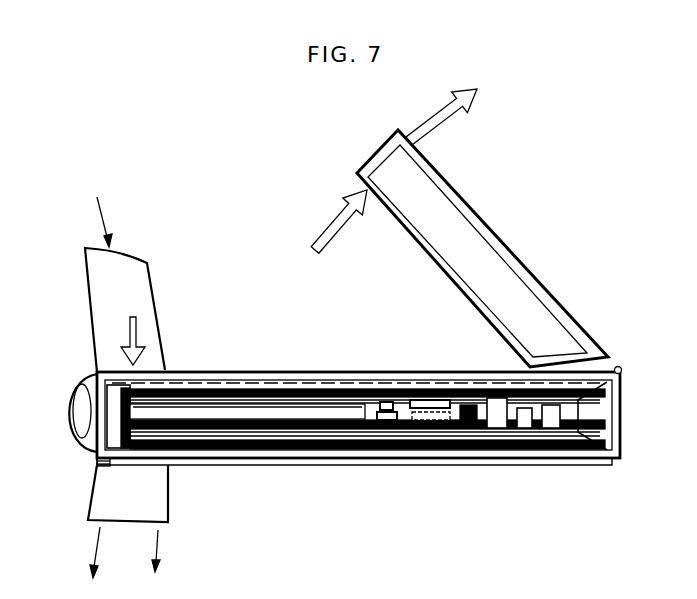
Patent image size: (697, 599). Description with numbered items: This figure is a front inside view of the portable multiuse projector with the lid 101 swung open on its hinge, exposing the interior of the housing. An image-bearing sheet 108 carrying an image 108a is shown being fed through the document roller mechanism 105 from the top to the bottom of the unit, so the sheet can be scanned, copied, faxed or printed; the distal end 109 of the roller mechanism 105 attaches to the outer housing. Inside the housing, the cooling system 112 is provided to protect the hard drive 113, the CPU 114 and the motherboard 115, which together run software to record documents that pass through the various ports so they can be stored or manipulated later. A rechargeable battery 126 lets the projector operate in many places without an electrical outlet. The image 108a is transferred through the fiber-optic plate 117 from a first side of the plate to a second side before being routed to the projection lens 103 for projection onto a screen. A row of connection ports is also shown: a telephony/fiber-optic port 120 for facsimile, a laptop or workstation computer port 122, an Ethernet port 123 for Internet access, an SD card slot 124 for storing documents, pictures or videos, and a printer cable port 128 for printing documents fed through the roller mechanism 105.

The lid 101 is at (491, 232).
The projection lens 103 is at (621, 367).
The document roller mechanism 105 is at (88, 370).
The image-bearing sheet 108 is at (135, 260).
The image 108a is at (137, 352).
The distal end 109 is at (76, 452).
The cooling system 112 is at (405, 465).
The hard drive 113 is at (555, 445).
The CPU 114 is at (440, 455).
The motherboard 115 is at (298, 442).
The fiber-optic plate 117 is at (297, 404).
The telephony/fiber-optic port 120 is at (365, 398).
The laptop or workstation computer port 122 is at (482, 430).
The Ethernet port 123 is at (372, 425).
The SD card slot 124 is at (452, 400).
The rechargeable battery 126 is at (217, 406).
The printer cable port 128 is at (404, 400).